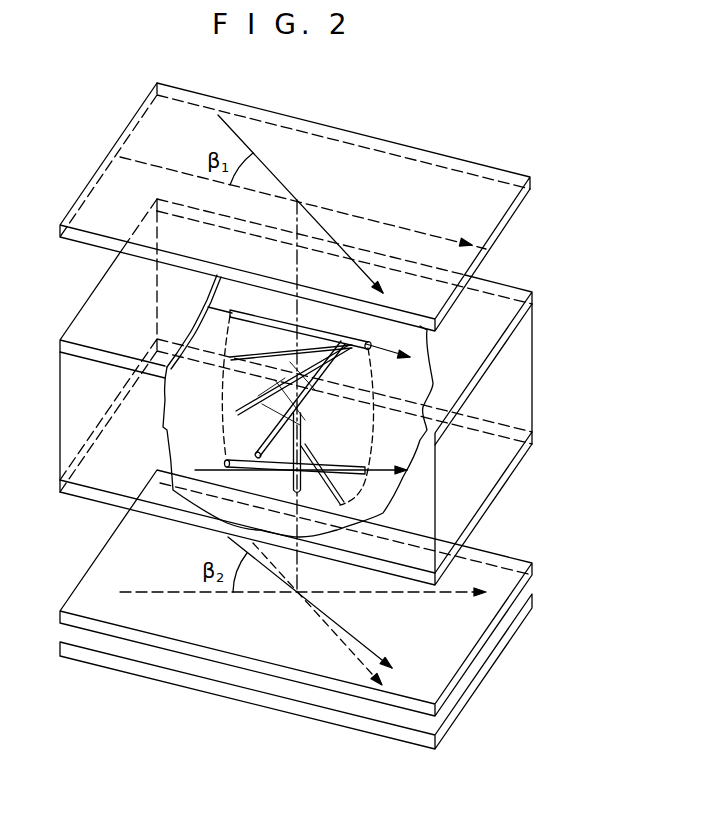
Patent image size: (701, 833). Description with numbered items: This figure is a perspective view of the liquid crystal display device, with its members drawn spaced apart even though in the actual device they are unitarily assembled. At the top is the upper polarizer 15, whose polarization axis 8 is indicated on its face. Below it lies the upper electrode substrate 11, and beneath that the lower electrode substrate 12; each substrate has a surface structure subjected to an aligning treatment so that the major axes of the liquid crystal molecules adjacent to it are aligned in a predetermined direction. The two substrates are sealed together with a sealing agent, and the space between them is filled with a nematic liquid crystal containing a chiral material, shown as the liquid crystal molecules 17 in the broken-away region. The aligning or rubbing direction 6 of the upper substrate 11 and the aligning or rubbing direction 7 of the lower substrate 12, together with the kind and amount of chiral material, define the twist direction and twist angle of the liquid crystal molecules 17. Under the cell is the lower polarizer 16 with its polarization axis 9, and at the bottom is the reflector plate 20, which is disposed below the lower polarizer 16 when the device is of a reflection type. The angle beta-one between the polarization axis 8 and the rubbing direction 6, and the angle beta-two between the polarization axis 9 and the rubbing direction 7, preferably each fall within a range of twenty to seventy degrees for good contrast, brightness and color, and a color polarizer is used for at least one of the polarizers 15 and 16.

The aligning or rubbing direction of the upper substrate 6 is at (438, 236).
The aligning or rubbing direction of the lower substrate 7 is at (400, 458).
The polarization axis of the upper polarizer 8 is at (247, 140).
The polarization axis of the lower polarizer 9 is at (343, 635).
The upper electrode substrate 11 is at (320, 322).
The lower electrode substrate 12 is at (512, 470).
The upper polarizer 15 is at (483, 190).
The lower polarizer 16 is at (327, 593).
The liquid crystal molecules 17 is at (204, 287).
The reflector plate 20 is at (468, 687).